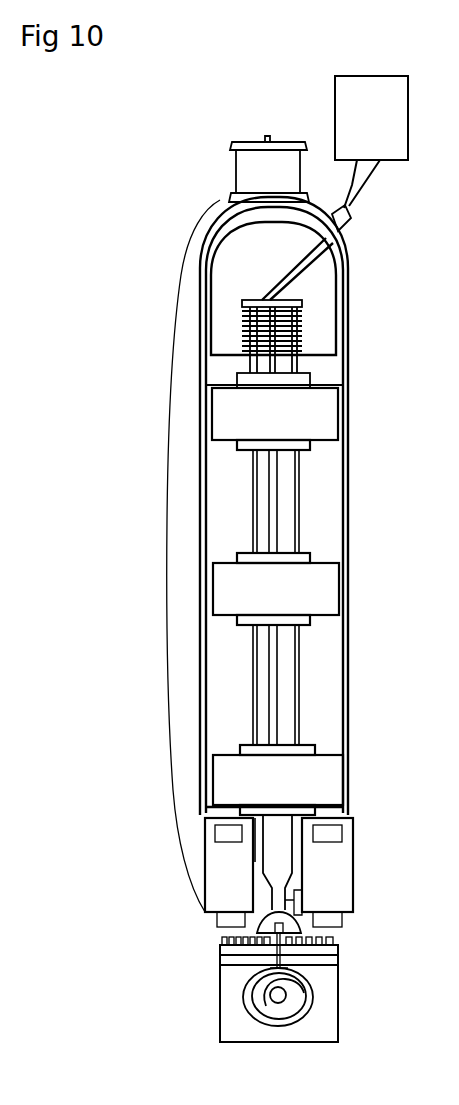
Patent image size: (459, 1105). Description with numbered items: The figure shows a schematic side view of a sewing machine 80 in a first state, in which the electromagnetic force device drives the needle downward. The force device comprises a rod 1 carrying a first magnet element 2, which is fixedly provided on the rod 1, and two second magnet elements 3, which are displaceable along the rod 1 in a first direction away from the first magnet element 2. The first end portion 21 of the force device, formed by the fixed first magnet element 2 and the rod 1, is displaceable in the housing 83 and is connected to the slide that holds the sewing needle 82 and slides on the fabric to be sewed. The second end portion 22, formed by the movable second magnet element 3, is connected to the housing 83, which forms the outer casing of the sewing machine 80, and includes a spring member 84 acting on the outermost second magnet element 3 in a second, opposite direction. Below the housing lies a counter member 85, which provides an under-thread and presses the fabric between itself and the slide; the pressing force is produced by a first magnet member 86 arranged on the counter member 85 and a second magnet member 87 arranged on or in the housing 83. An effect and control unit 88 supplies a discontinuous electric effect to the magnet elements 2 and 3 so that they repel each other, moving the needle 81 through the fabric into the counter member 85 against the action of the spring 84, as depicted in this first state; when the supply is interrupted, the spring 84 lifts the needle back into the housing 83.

The effect and/or control unit 88 is at (373, 110).
The sewing machine 80 is at (163, 228).
The spring member 84 is at (242, 318).
The second end portion 22 is at (232, 373).
The housing 83 is at (205, 380).
The second magnet element 3 is at (237, 412).
The rod 1 is at (257, 499).
The first magnet element 2 is at (270, 768).
The first end portion 21 is at (212, 803).
The second magnet member 87 is at (222, 887).
The sewing needle 81 is at (265, 921).
The sewing needle 82 is at (222, 937).
The first magnet member 86 is at (235, 957).
The counter member 85 is at (233, 995).